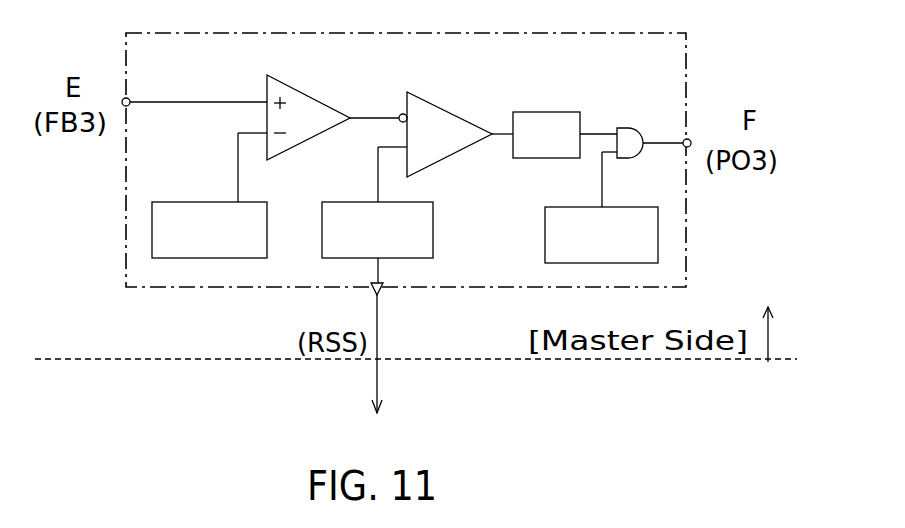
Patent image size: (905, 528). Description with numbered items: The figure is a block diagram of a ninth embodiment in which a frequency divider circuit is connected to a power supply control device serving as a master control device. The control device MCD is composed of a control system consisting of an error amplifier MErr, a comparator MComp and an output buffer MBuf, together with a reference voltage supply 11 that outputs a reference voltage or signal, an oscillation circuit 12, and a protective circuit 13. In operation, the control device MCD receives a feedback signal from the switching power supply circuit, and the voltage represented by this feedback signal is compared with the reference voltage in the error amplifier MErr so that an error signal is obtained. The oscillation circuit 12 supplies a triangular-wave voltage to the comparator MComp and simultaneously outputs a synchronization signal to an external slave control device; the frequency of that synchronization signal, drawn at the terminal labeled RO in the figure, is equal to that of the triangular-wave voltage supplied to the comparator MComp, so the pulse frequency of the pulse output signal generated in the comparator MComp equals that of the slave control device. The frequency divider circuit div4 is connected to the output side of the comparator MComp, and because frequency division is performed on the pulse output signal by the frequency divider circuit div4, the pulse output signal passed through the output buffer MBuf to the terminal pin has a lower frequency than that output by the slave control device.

The reference voltage supply 11 is at (172, 195).
The oscillation circuit 12 is at (347, 195).
The protective circuit 13 is at (543, 228).
The control device MCD is at (693, 56).
The error amplifier MErr is at (262, 80).
The comparator MComp is at (403, 97).
The frequency divider circuit div4 is at (533, 105).
The output buffer MBuf is at (637, 118).
The reference oscillation output RO is at (394, 335).